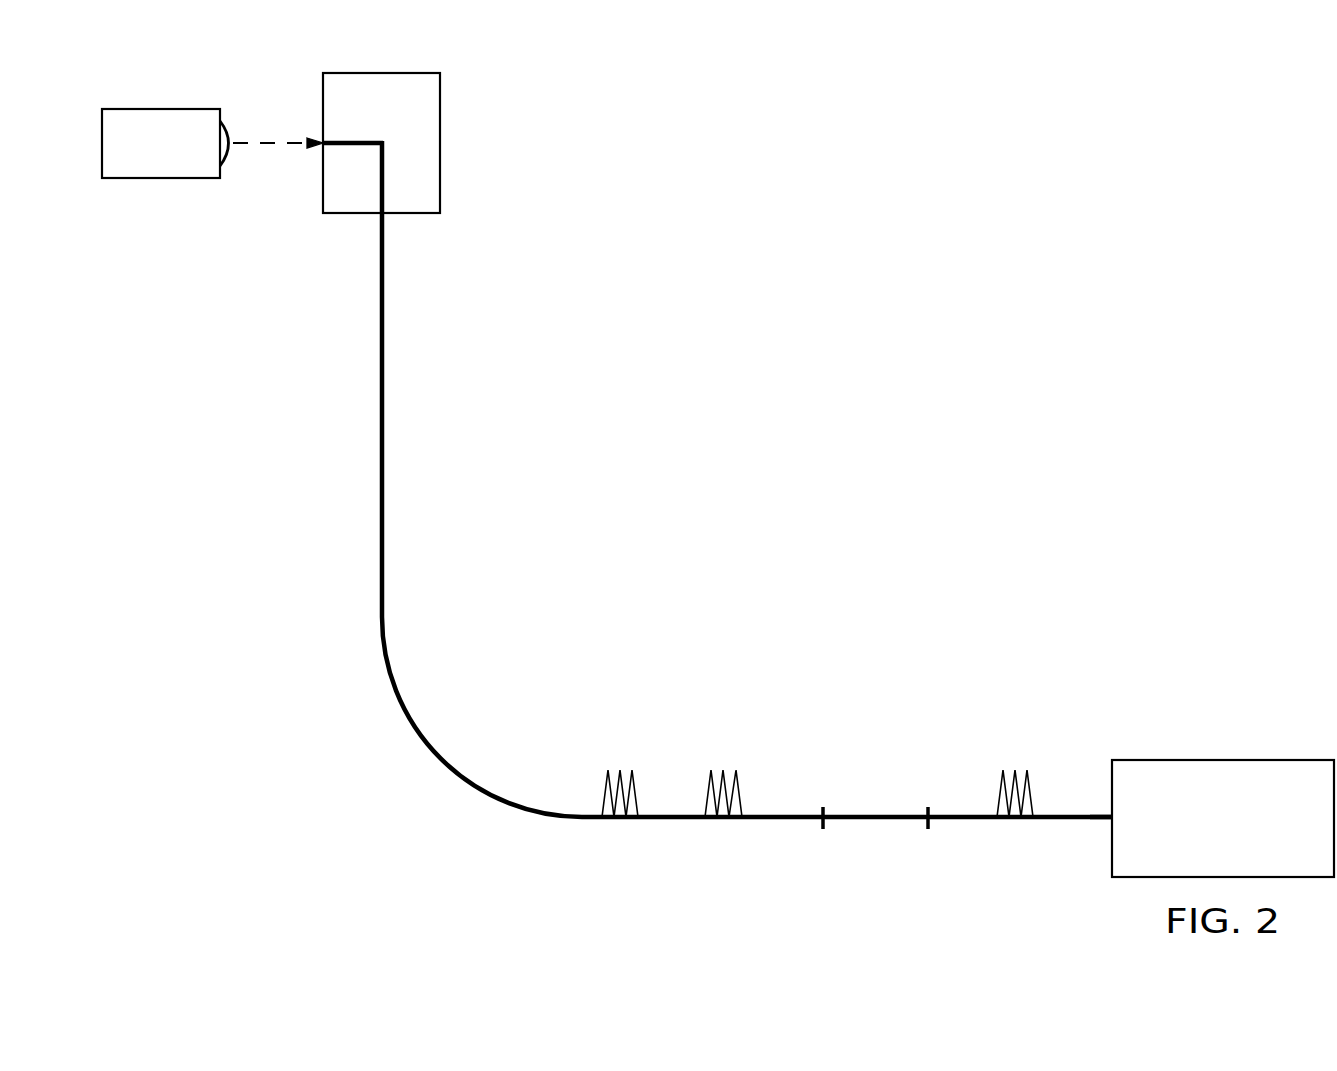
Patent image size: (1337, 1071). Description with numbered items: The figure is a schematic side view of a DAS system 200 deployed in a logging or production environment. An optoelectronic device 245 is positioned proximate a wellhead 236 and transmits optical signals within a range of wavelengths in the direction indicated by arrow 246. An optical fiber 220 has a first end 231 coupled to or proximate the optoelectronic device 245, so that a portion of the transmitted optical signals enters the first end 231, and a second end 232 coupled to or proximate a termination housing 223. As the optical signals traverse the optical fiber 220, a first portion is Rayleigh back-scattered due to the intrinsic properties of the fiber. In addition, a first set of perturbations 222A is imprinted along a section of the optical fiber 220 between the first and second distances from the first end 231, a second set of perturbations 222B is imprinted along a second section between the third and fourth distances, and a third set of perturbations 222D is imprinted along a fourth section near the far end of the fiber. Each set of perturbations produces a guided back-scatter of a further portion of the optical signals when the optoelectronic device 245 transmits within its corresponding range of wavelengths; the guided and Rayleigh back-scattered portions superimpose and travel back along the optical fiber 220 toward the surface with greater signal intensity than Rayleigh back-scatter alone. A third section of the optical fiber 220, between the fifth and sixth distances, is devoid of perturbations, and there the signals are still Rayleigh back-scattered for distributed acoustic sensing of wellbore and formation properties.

The DAS system 200 is at (970, 196).
The optoelectronic device 245 is at (162, 108).
The arrow 246 is at (270, 140).
The wellhead 236 is at (370, 73).
The first end 231 is at (328, 140).
The optical fiber 220 is at (380, 515).
The first set of perturbations 222A is at (601, 797).
The second set of perturbations 222B is at (742, 797).
The third set of perturbations 222D is at (997, 797).
The second end 232 is at (1110, 812).
The termination housing 223 is at (1200, 835).